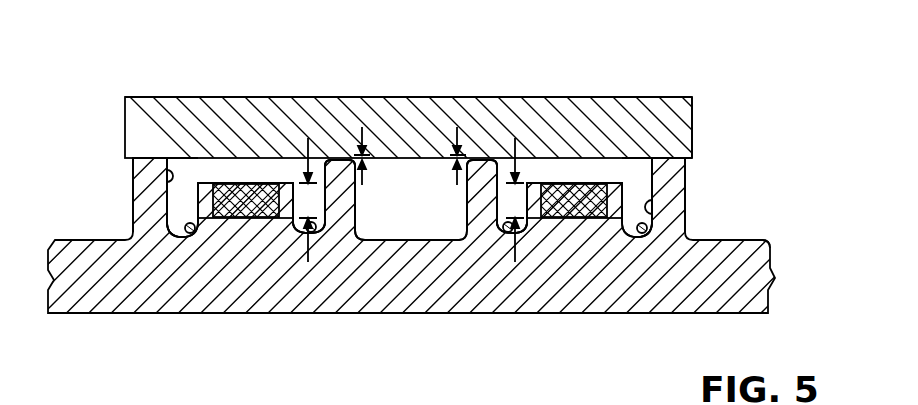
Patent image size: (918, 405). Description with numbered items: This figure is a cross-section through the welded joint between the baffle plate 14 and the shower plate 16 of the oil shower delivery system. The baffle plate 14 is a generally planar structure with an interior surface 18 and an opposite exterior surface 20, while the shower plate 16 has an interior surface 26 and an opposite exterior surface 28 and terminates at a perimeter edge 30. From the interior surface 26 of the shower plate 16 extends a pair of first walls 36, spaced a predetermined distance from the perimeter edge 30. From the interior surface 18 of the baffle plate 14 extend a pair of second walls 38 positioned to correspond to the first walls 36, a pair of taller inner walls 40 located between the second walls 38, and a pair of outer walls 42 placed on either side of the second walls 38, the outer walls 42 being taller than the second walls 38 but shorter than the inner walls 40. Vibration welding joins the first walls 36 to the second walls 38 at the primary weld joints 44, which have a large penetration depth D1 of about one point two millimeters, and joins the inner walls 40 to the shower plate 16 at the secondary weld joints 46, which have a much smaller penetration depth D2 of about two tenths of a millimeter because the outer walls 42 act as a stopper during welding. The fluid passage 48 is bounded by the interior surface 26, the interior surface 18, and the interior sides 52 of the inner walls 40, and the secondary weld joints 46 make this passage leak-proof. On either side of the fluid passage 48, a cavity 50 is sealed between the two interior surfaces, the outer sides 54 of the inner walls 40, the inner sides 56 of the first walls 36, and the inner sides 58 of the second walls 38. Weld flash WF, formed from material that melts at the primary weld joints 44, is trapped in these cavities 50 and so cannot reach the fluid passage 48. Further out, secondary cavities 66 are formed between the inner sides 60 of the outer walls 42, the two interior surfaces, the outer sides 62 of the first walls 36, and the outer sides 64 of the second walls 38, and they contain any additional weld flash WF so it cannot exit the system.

The baffle plate 14 is at (750, 282).
The shower plate 16 is at (693, 122).
The interior surface of the baffle plate 18 is at (760, 240).
The exterior surface of the baffle plate 20 is at (752, 315).
The interior surface of the shower plate 26 is at (690, 170).
The exterior surface of the shower plate 28 is at (672, 97).
The perimeter edge of the shower plate 30 is at (125, 128).
The first walls 36 is at (233, 168).
The second walls 38 is at (235, 222).
The inner walls 40 is at (467, 189).
The outer walls 42 is at (150, 213).
The primary weld joints 44 is at (255, 210).
The secondary weld joints 46 is at (342, 158).
The fluid passage 48 is at (421, 231).
The cavities 50 is at (300, 150).
The interior sides of the inner walls 52 is at (345, 248).
The outer sides of the inner walls 54 is at (333, 160).
The inner sides of the first walls 56 is at (280, 166).
The inner sides of the second walls 58 is at (300, 230).
The inner sides of the outer walls 60 is at (135, 162).
The outer sides of the first walls 62 is at (187, 165).
The outer sides of the second walls 64 is at (200, 195).
The secondary cavities 66 is at (172, 230).
The weld flash WF is at (187, 232).
The penetration depth of the primary weld joints D1 is at (413, 200).
The penetration depth of the secondary weld joints D2 is at (447, 152).